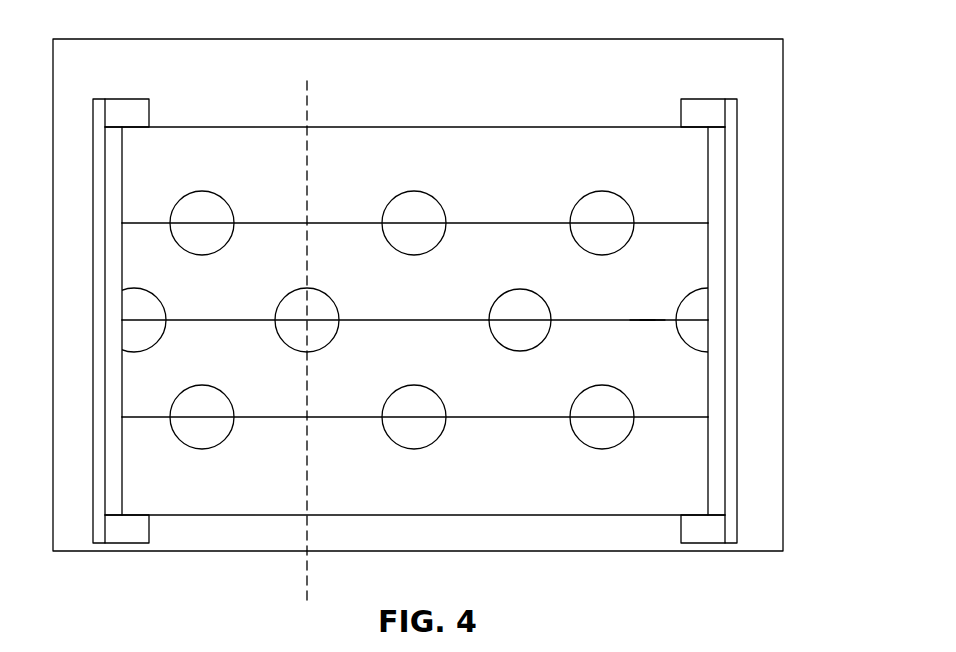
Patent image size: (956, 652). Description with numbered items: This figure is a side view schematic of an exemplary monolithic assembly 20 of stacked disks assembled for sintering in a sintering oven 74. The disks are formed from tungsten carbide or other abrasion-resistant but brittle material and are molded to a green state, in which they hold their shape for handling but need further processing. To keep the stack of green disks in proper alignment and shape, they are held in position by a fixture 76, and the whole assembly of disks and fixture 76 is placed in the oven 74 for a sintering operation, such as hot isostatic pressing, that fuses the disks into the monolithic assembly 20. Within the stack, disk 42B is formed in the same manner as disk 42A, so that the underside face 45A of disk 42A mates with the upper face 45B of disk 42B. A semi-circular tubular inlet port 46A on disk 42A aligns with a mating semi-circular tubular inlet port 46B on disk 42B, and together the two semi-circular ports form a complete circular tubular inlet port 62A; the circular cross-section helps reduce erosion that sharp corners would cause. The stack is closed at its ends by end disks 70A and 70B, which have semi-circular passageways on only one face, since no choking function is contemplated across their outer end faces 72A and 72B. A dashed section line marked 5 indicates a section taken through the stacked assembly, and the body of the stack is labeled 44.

The sintering oven 74 is at (743, 39).
The monolithic assembly 20 is at (645, 76).
The fixture 76 is at (704, 99).
The end face of end disk 70A 72A is at (539, 127).
The end face of end disk 70B 72B is at (540, 515).
The panel 44 is at (677, 178).
The end disk 70A is at (692, 205).
The disk 42A is at (698, 277).
The disk 42B is at (700, 367).
The end disk 70B is at (692, 472).
The circular tubular inlet port 62A is at (420, 317).
The semi-circular tubular inlet port 46A is at (520, 303).
The semi-circular tubular inlet port 46B is at (520, 333).
The underside face 45A is at (643, 325).
The upper face 45B is at (654, 316).
The section line 5- 5 is at (307, 81).